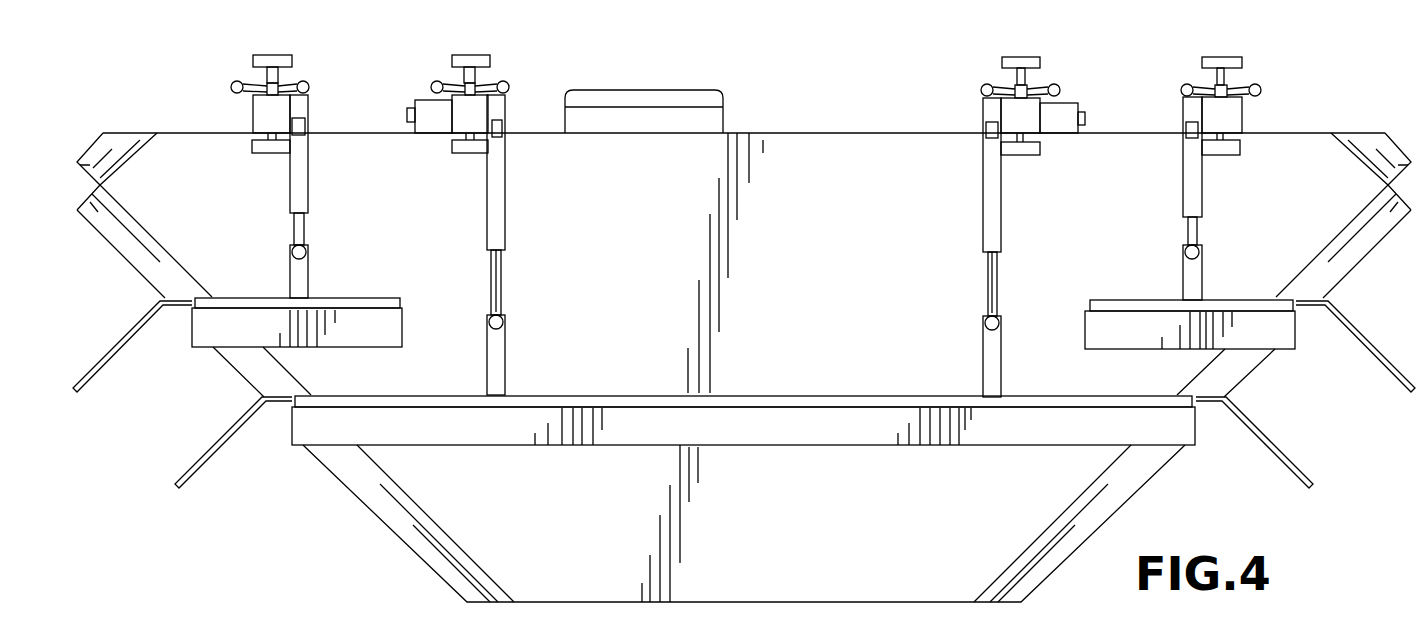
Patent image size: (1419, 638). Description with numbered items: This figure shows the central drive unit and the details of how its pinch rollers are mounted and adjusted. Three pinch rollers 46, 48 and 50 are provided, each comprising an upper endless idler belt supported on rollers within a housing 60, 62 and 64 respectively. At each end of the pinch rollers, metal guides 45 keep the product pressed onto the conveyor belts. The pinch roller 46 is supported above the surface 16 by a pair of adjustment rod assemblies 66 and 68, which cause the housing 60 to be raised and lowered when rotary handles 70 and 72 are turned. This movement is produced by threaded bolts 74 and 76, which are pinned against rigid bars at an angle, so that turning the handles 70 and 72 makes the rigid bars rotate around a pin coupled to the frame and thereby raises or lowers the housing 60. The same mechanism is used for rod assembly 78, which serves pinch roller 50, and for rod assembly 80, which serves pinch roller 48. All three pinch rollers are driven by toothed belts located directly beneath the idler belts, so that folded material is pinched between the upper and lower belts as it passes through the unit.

The surface 16 is at (856, 155).
The metal guides 45 is at (190, 462).
The pinch roller 46 is at (743, 450).
The pinch roller 48 is at (319, 352).
The pinch roller 50 is at (1209, 316).
The housing 60 is at (1013, 430).
The housing 62 is at (1295, 330).
The housing 64 is at (245, 332).
The adjustment rod assembly 66 is at (505, 202).
The adjustment rod assembly 68 is at (1001, 203).
The rotary handle 70 is at (484, 82).
The rotary handle 72 is at (1040, 85).
The threaded bolt 74 is at (501, 283).
The threaded bolt 76 is at (997, 283).
The rod assembly 78 is at (1202, 198).
The rod assembly 80 is at (308, 183).